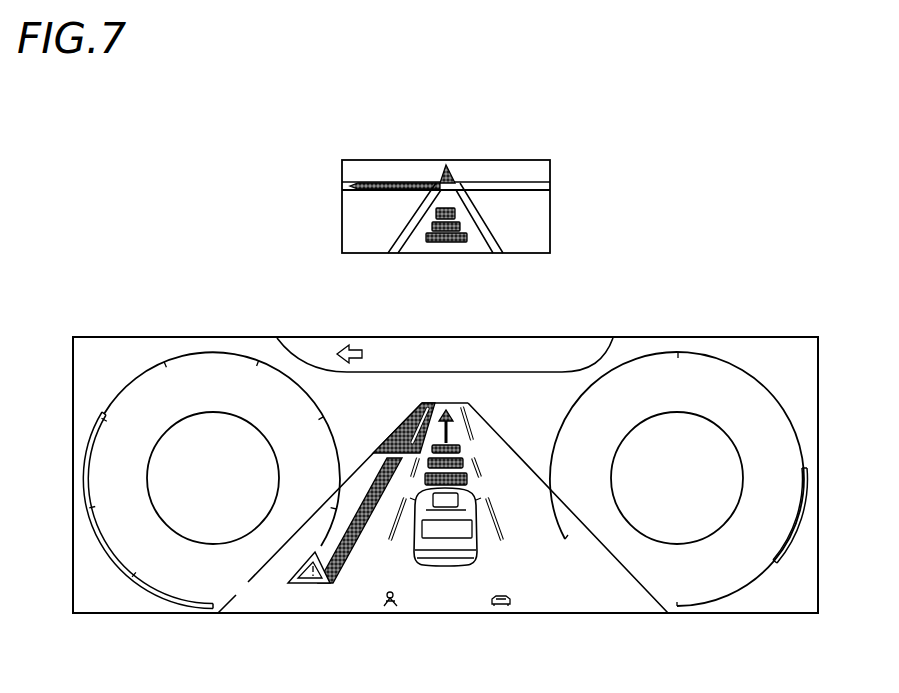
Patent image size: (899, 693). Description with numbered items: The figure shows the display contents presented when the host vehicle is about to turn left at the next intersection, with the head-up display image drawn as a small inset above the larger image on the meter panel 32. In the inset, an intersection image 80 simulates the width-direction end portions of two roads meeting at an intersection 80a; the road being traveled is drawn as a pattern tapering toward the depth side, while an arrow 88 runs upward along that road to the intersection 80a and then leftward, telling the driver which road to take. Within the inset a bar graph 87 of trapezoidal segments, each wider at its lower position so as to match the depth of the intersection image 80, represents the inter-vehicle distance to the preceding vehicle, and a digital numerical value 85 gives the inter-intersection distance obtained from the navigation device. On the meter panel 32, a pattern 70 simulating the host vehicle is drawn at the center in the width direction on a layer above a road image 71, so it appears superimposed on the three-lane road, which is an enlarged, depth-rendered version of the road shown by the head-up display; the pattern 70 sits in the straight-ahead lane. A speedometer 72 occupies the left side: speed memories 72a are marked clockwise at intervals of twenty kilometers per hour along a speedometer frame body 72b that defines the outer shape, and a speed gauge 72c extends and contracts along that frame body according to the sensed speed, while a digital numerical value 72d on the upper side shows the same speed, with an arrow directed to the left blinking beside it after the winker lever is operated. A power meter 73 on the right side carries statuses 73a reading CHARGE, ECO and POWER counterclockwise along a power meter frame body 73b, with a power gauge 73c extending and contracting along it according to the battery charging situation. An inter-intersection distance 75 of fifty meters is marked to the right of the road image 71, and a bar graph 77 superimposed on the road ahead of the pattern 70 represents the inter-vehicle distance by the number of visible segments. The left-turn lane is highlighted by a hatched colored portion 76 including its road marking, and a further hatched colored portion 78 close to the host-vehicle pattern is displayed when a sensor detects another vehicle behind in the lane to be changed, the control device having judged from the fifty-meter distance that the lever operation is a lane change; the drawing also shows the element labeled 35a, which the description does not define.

The meter panel 32 is at (755, 336).
The head-up display image 35a is at (530, 161).
The pattern simulating the host vehicle 70 is at (468, 566).
The road image 71 is at (527, 548).
The speedometer 72 is at (113, 374).
The speed memories 72a is at (207, 608).
The speedometer frame body 72b is at (150, 370).
The speed gauge 72c is at (82, 478).
The digital numerical value 72d is at (444, 337).
The power meter 73 is at (777, 372).
The statuses 73a is at (590, 384).
The power meter frame body 73b is at (712, 354).
The power gauge 73c is at (806, 537).
The inter-intersection distance 75 is at (537, 423).
The colored portion 76 is at (418, 402).
The bar graph 77 is at (415, 481).
The colored portion 78 is at (318, 553).
The intersection image 80 is at (463, 177).
The intersection 80a is at (443, 183).
The digital numerical value 85 is at (540, 230).
The bar graph 87 is at (443, 236).
The arrow 88 is at (382, 182).